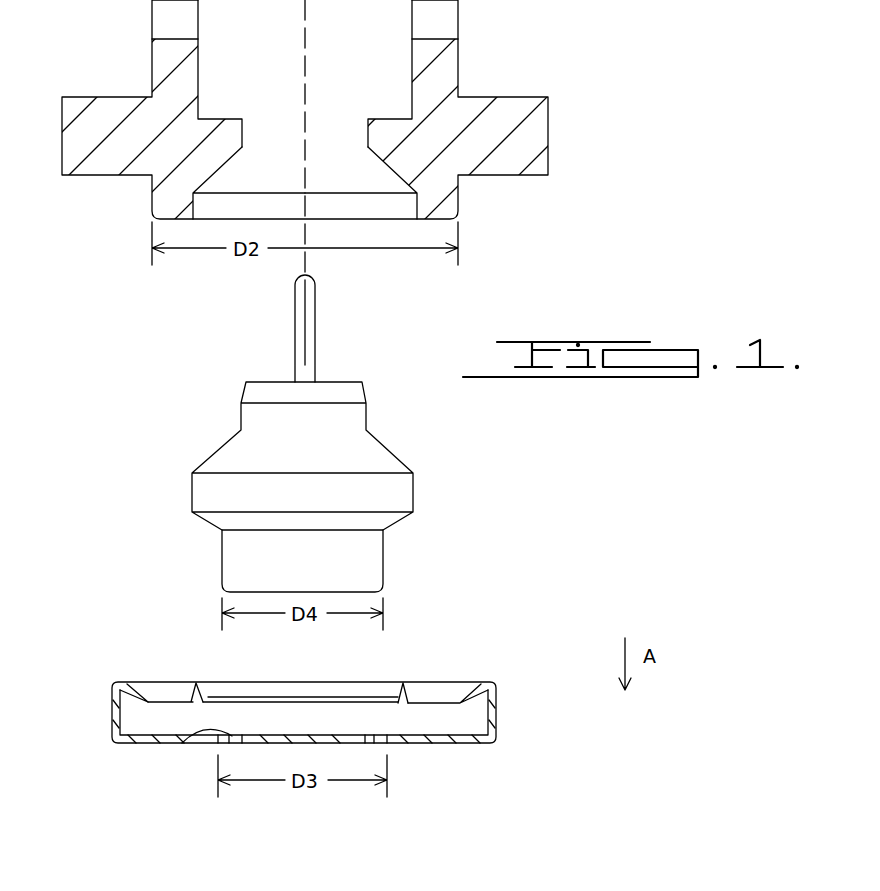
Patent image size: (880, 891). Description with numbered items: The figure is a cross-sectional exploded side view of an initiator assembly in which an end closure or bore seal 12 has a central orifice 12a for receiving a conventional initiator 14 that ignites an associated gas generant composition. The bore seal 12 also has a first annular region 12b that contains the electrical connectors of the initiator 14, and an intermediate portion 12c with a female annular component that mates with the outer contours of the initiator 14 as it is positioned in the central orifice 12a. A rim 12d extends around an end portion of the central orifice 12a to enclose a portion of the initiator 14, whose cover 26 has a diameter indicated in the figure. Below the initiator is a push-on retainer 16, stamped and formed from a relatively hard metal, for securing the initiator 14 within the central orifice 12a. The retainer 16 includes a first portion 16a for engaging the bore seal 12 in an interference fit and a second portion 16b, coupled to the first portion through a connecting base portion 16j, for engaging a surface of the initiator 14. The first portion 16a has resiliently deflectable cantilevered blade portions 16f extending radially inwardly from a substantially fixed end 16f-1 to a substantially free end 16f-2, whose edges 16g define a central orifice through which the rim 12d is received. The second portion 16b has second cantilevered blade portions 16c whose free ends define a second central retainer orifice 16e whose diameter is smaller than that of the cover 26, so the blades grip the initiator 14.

The bore seal 12 is at (538, 87).
The central orifice 12a is at (332, 133).
The first annular region 12b is at (222, 85).
The intermediate portion 12c is at (252, 177).
The rim 12d is at (437, 190).
The initiator 14 is at (430, 503).
The cover 26 is at (385, 566).
The push-on retainer 16 is at (474, 750).
The first portion 16a is at (167, 686).
The second portion 16b is at (197, 745).
The second resiliently deflectable cantilevered blade portions 16c is at (150, 747).
The second central retainer orifice 16e is at (257, 782).
The first resiliently deflectable cantilevered blade portions 16f is at (433, 673).
The substantially fixed end 16f-1 is at (263, 685).
The substantially free end 16f-2 is at (453, 687).
The edges 16g is at (325, 697).
The connecting base portion 16j is at (112, 712).